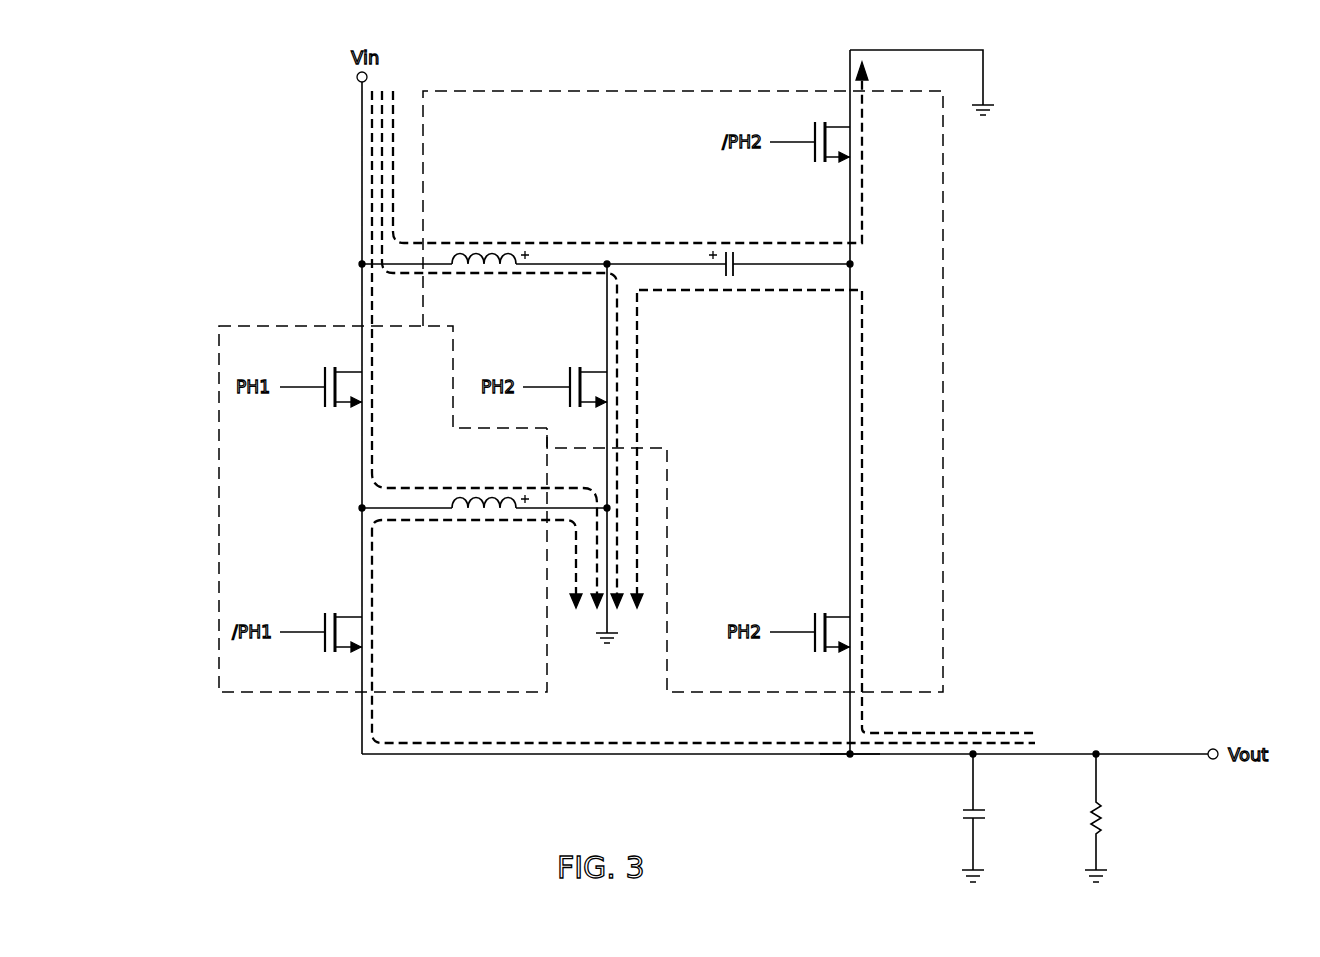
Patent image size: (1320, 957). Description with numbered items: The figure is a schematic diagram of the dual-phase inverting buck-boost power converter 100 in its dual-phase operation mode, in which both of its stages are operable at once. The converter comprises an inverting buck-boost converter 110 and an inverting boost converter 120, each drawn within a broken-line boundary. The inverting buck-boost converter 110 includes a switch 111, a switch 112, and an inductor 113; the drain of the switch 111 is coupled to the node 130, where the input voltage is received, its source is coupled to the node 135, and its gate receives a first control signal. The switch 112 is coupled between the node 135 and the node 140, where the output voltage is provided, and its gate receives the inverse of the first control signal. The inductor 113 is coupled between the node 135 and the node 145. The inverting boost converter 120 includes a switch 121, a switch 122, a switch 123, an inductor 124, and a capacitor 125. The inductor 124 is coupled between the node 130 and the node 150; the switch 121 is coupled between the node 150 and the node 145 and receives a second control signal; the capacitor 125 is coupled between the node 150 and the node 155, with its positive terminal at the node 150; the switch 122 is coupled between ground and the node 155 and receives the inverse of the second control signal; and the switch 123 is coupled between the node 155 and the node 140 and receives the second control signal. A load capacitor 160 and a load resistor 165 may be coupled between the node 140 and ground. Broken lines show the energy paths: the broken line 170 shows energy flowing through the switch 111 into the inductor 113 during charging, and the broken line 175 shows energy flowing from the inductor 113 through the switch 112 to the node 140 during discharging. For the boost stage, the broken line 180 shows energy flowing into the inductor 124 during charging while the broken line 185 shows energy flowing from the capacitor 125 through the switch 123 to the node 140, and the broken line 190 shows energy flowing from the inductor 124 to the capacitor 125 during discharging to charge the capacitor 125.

The dual-phase inverting buck-boost power converter 100 is at (214, 102).
The inverting buck-boost converter 110 is at (333, 694).
The switch 111 is at (325, 373).
The switch 112 is at (325, 645).
The inductor 113 is at (462, 490).
The inverting boost converter 120 is at (945, 319).
The switch 121 is at (569, 373).
The switch 122 is at (815, 129).
The switch 123 is at (815, 645).
The inductor 124 is at (476, 248).
The capacitor 125 is at (736, 252).
The node 130 is at (352, 264).
The node 135 is at (352, 507).
The node 140 is at (857, 760).
The node 145 is at (615, 505).
The node 150 is at (609, 255).
The node 155 is at (858, 263).
The load capacitor 160 is at (987, 815).
The load resistor 165 is at (1102, 818).
The broken line 170 is at (375, 384).
The broken line 175 is at (589, 742).
The broken line 180 is at (492, 276).
The broken line 185 is at (757, 291).
The broken line 190 is at (657, 242).